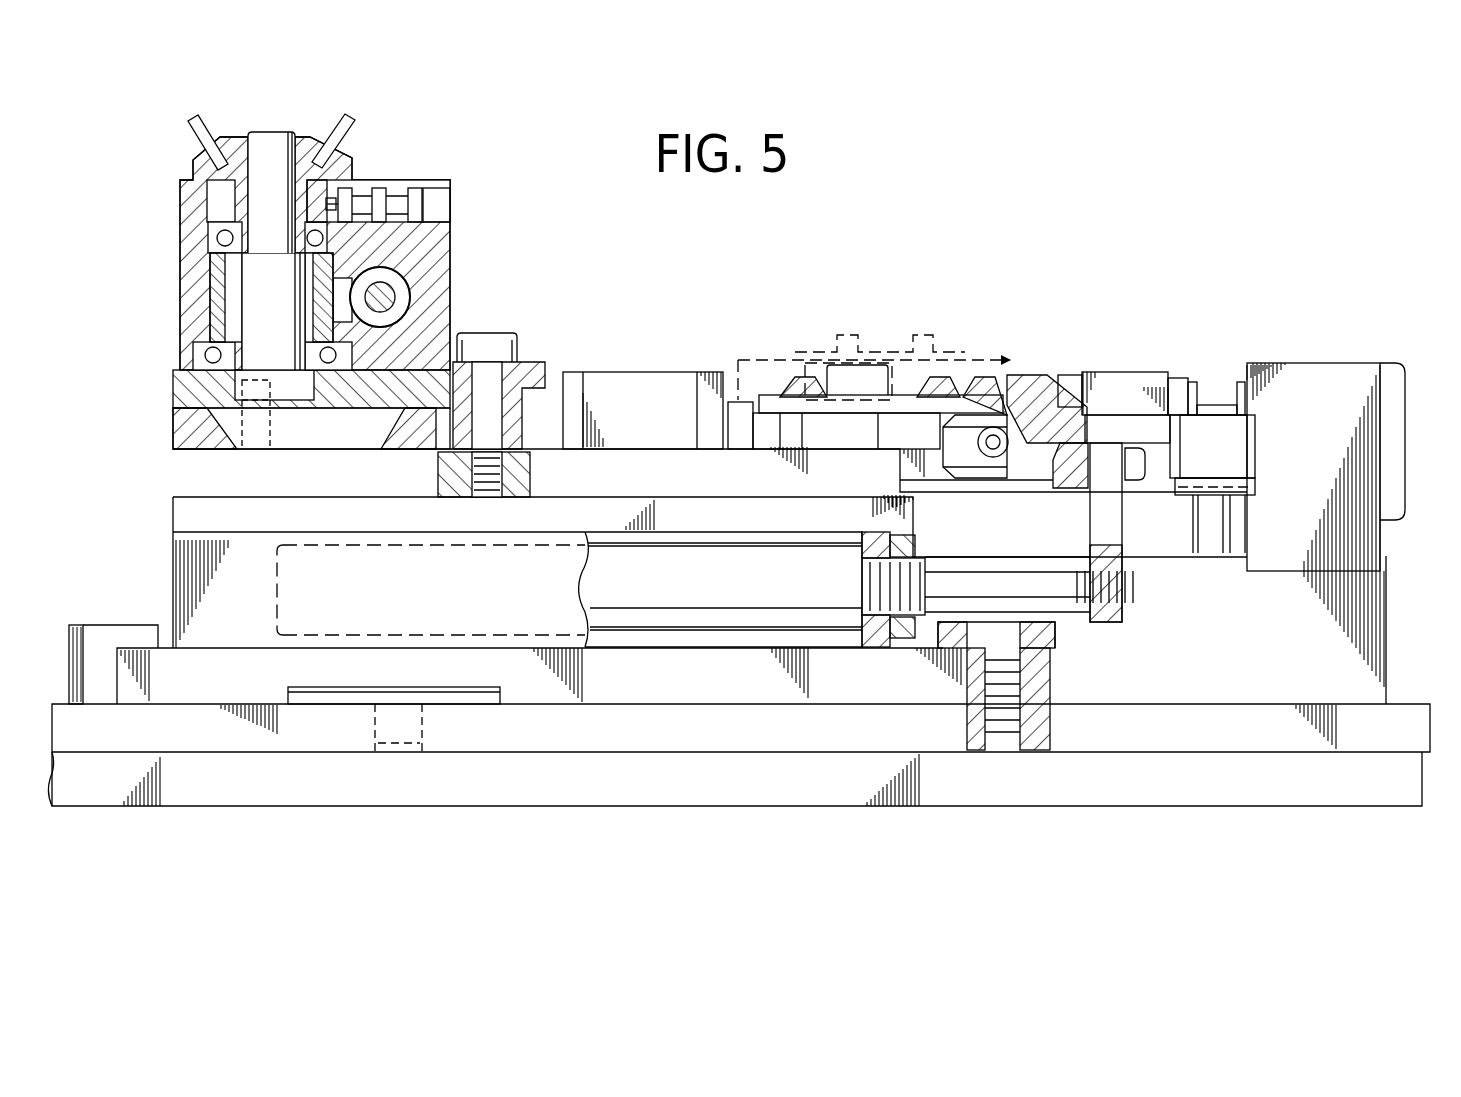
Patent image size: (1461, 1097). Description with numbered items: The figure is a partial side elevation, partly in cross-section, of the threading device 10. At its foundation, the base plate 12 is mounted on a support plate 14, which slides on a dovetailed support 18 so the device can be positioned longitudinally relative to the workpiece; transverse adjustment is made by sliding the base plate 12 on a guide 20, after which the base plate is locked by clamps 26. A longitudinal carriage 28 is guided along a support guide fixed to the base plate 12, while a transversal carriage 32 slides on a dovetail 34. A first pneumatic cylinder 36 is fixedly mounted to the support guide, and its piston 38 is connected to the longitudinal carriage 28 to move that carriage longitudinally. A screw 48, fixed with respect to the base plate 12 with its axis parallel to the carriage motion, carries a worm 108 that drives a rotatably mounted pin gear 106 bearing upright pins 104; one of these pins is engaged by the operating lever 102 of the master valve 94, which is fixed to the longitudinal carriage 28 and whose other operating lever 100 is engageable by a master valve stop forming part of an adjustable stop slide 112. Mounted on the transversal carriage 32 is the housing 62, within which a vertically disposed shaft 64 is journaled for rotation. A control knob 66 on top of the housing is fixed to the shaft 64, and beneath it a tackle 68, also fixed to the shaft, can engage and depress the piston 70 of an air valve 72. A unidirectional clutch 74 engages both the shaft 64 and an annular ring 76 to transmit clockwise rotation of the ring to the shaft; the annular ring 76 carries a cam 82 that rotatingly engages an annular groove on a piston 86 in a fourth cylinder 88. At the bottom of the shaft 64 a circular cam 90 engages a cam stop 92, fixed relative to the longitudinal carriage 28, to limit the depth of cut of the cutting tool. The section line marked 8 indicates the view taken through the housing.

The section line 8- 8 is at (110, 206).
The threading device 10 is at (952, 178).
The base plate 12 is at (158, 660).
The support plate 14 is at (1405, 704).
The dovetailed support 18 is at (1165, 785).
The guide 20 is at (457, 700).
The clamps 26 is at (84, 632).
The longitudinal carriage 28 is at (680, 505).
The transversal carriage 32 is at (182, 392).
The dovetail 34 is at (232, 431).
The first pneumatic cylinder 36 is at (652, 612).
The piston 38 is at (1047, 593).
The screw 48 is at (1022, 375).
The housing 62 is at (440, 262).
The shaft 64 is at (270, 140).
The control knob 66 is at (242, 137).
The tackle 68 is at (335, 170).
The piston 70 is at (330, 183).
The air valve 72 is at (395, 192).
The unidirectional clutch 74 is at (252, 293).
The annular ring 76 is at (218, 271).
The cam 82 is at (356, 246).
The piston 86 is at (386, 294).
The fourth cylinder 88 is at (396, 310).
The circular cam 90 is at (237, 378).
The cam stop 92 is at (176, 414).
The master valve 94 is at (1118, 385).
The operating lever 100 is at (930, 346).
The operating lever 102 is at (1178, 382).
The upright pins 104 is at (1190, 380).
The pin gear 106 is at (1218, 428).
The worm 108 is at (1212, 408).
The adjustable stop slide 112 is at (886, 350).